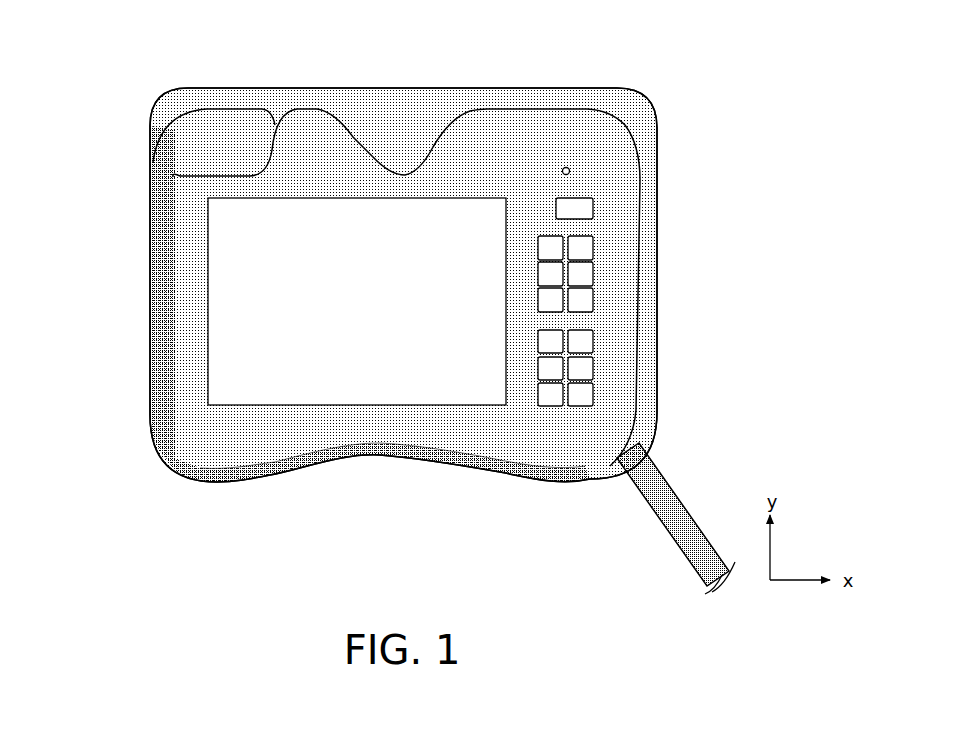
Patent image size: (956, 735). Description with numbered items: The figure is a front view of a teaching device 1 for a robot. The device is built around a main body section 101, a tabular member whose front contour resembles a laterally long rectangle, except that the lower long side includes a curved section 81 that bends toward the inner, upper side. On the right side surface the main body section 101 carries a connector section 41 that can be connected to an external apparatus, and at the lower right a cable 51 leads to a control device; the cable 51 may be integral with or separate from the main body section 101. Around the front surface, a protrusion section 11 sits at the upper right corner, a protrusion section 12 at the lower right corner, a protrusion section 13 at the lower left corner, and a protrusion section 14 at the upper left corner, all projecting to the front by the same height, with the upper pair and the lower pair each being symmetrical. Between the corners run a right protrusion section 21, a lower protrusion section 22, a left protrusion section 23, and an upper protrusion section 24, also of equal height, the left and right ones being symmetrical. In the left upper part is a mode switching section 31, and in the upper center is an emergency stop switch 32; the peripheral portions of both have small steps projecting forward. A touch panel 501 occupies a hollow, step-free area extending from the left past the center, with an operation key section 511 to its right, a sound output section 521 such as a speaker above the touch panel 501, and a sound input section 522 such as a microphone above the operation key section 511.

The teaching device 1 is at (690, 128).
The protrusion section 11 is at (630, 95).
The protrusion section 12 is at (650, 425).
The protrusion section 13 is at (182, 480).
The protrusion section 14 is at (168, 108).
The right protrusion section 21 is at (657, 270).
The lower protrusion section 22 is at (353, 470).
The left protrusion section 23 is at (165, 282).
The upper protrusion section 24 is at (363, 95).
The mode switching section 31 is at (237, 143).
The emergency stop switch 32 is at (417, 130).
The connector section 41 is at (657, 207).
The cable 51 is at (687, 527).
The curved section 81 is at (417, 467).
The main body section 101 is at (563, 430).
The touch panel 501 is at (250, 327).
The operation key section 511 is at (612, 308).
The sound output section 521 is at (307, 140).
The sound input section 522 is at (565, 167).